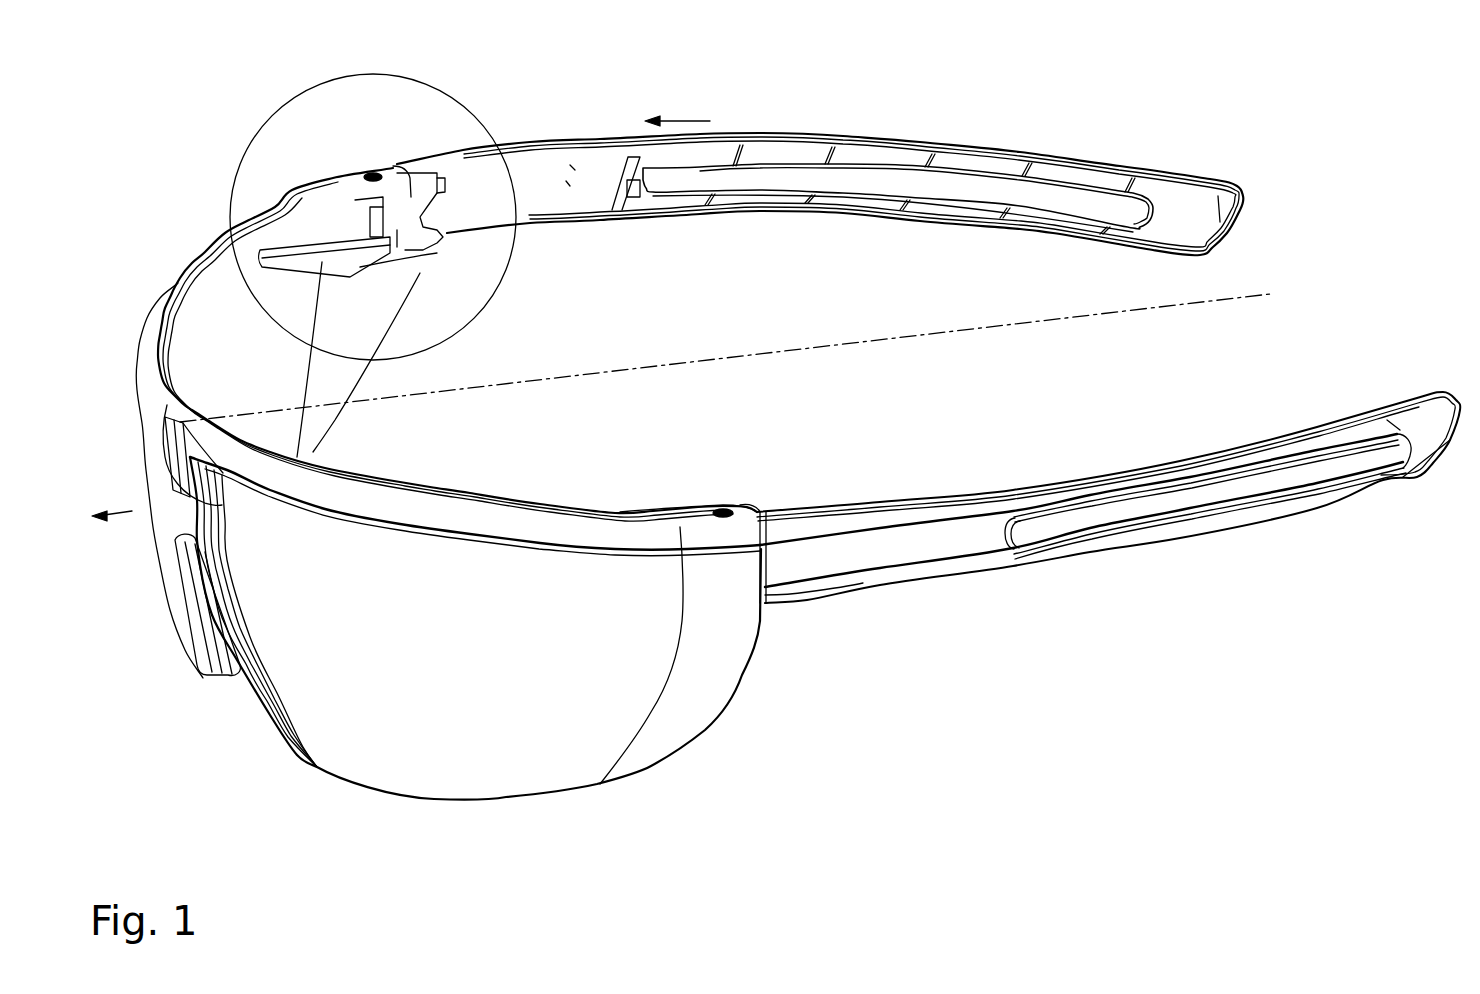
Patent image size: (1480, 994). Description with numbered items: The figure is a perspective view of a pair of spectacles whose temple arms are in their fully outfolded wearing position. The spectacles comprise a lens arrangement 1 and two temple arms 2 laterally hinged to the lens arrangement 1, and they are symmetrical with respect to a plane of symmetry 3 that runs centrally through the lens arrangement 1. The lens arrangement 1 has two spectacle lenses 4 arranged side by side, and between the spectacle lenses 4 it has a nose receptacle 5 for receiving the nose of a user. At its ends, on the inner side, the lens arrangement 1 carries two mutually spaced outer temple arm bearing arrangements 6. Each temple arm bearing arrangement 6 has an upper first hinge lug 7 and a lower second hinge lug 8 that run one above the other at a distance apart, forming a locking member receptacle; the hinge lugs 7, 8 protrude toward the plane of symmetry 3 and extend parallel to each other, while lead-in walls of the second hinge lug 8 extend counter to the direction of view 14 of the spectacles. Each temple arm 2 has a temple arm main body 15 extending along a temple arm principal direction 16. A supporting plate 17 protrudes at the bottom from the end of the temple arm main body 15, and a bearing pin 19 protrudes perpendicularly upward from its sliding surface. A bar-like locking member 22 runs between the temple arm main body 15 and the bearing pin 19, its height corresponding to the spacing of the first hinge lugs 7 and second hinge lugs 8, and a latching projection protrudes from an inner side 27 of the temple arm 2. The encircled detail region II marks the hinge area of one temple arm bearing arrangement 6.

The lens arrangement 1 is at (358, 790).
The temple arm 2 is at (928, 464).
The plane of symmetry 3 is at (935, 332).
The spectacle lens 4 is at (428, 785).
The nose receptacle 5 is at (238, 688).
The temple arm bearing arrangement 6 is at (361, 168).
The first hinge lug 7 is at (333, 185).
The second hinge lug 8 is at (322, 260).
The direction of view 14 is at (110, 516).
The temple arm main body 15 is at (866, 141).
The temple arm principal direction 16 is at (683, 121).
The supporting plate 17 is at (566, 181).
The bearing pin 19 is at (383, 205).
The locking member 22 is at (393, 220).
The inner side of the temple arm 27 is at (570, 165).
The detail view II is at (463, 103).